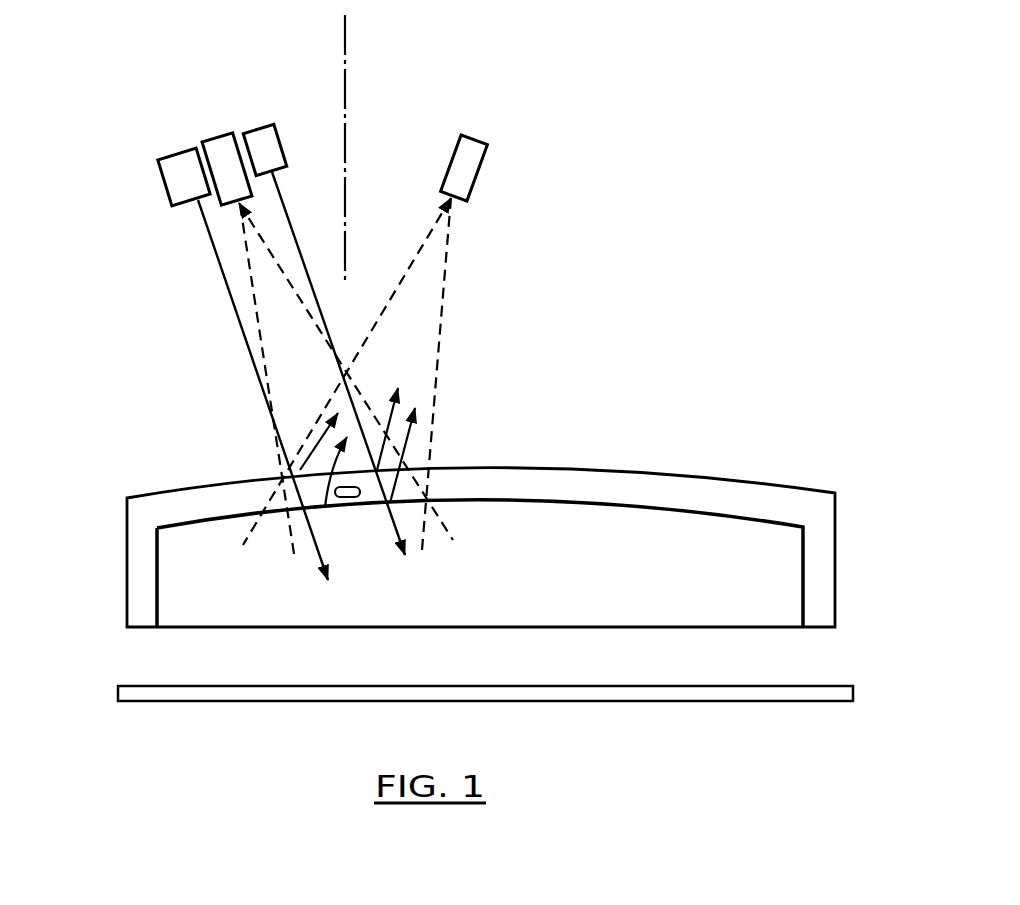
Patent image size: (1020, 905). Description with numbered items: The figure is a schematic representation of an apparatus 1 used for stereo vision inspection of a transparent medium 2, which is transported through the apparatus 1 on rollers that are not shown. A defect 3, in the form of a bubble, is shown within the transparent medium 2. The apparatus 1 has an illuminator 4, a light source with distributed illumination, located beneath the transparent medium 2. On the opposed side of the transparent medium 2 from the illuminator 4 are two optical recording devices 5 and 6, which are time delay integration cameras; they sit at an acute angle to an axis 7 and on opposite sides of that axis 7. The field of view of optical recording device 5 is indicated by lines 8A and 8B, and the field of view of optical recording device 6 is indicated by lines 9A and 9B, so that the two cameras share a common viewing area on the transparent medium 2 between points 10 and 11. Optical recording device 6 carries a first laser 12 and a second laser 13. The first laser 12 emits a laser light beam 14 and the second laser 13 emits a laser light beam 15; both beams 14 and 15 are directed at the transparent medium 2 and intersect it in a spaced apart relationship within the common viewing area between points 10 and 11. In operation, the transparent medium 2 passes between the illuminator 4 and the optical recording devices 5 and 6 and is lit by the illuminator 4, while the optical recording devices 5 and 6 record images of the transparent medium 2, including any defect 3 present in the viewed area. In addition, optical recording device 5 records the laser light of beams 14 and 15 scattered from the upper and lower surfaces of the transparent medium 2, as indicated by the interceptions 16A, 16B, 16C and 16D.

The apparatus 1 is at (638, 160).
The transparent medium 2 is at (687, 493).
The defect 3 is at (358, 497).
The illuminator 4 is at (570, 690).
The optical recording device 5 is at (467, 176).
The optical recording device 6 is at (220, 142).
The axis 7 is at (346, 49).
The line 8A is at (447, 340).
The line 8B is at (410, 265).
The line 9A is at (263, 247).
The line 9B is at (250, 284).
The point 10 is at (415, 459).
The point 11 is at (277, 469).
The first laser 12 is at (267, 143).
The second laser 13 is at (178, 163).
The laser light beam 14 is at (297, 230).
The laser light beam 15 is at (197, 208).
The interception 16A is at (412, 430).
The interception 16B is at (392, 412).
The interception 16C is at (333, 491).
The interception 16D is at (311, 432).